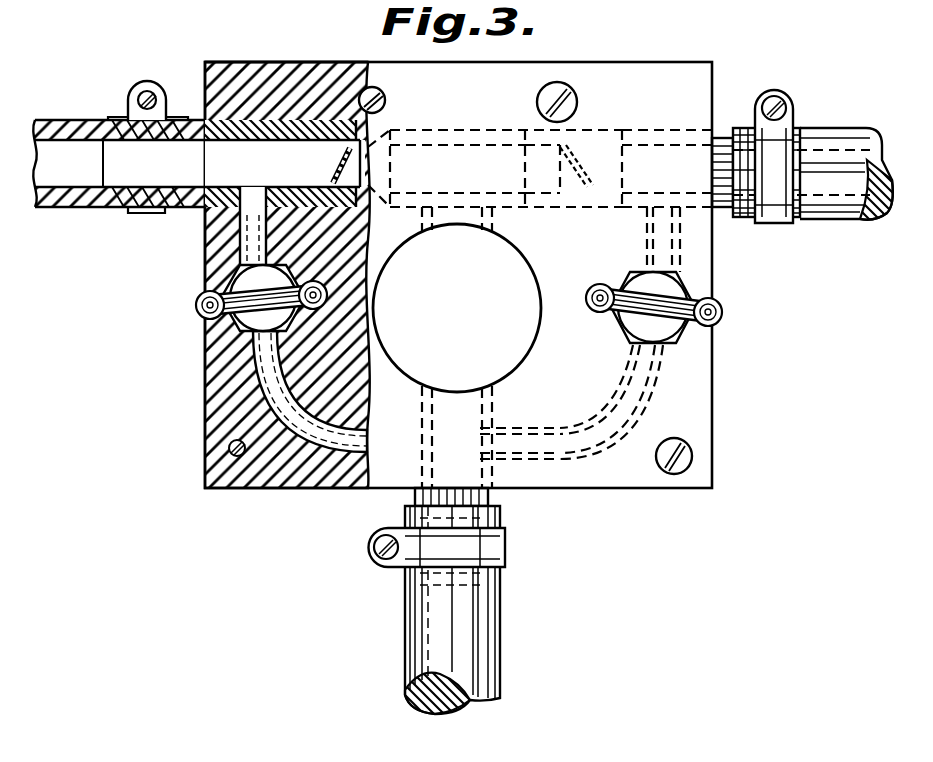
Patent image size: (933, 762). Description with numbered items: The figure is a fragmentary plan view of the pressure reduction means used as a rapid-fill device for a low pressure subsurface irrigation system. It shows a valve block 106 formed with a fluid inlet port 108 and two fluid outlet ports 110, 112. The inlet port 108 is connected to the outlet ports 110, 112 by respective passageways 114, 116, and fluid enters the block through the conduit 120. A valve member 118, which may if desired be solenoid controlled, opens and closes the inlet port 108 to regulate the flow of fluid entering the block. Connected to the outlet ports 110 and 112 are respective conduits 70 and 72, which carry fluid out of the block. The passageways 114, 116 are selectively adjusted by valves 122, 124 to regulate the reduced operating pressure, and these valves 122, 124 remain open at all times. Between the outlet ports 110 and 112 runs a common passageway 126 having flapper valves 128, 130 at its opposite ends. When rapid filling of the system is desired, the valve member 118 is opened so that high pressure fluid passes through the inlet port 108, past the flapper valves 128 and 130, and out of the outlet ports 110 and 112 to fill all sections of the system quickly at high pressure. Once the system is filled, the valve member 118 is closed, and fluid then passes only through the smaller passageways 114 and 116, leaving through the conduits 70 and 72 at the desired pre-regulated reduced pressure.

The conduit 70 is at (70, 119).
The conduit 72 is at (834, 134).
The valve block 106 is at (690, 368).
The fluid inlet port 108 is at (392, 490).
The fluid outlet port 110 is at (322, 64).
The fluid outlet port 112 is at (643, 133).
The passageway 114 is at (240, 255).
The passageway 116 is at (712, 232).
The valve member 118 is at (519, 273).
The conduit 120 is at (492, 655).
The valve 122 is at (203, 340).
The valve 124 is at (690, 292).
The common passageway 126 is at (477, 130).
The flapper valve 128 is at (340, 152).
The flapper valve 130 is at (595, 128).